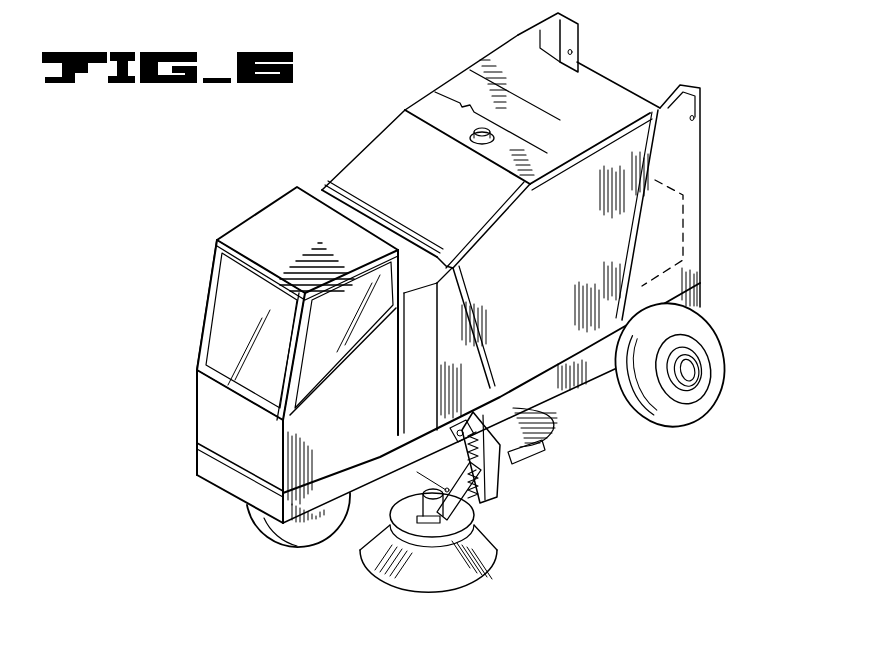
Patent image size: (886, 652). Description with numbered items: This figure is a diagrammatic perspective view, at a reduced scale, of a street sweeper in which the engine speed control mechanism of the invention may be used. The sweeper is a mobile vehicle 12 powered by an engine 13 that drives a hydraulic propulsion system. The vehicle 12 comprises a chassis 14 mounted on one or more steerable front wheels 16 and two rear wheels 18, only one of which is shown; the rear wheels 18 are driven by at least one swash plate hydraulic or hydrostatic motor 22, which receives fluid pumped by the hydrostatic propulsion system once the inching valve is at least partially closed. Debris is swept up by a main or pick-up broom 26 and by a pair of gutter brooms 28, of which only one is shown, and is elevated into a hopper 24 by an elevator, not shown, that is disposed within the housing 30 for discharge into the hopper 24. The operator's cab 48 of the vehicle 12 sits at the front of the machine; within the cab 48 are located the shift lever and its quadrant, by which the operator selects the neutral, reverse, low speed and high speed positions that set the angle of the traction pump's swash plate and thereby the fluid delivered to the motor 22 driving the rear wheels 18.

The mobile vehicle 12 is at (263, 160).
The engine 13 is at (686, 193).
The chassis 14 is at (198, 470).
The steerable front wheel 16 is at (268, 530).
The rear wheel 18 is at (710, 333).
The swash plate hydraulic motor 22 is at (689, 377).
The hopper 24 is at (557, 241).
The pick-up broom 26 is at (540, 427).
The gutter broom 28 is at (484, 532).
The housing 30 is at (413, 383).
The operator's cab 48 is at (199, 380).